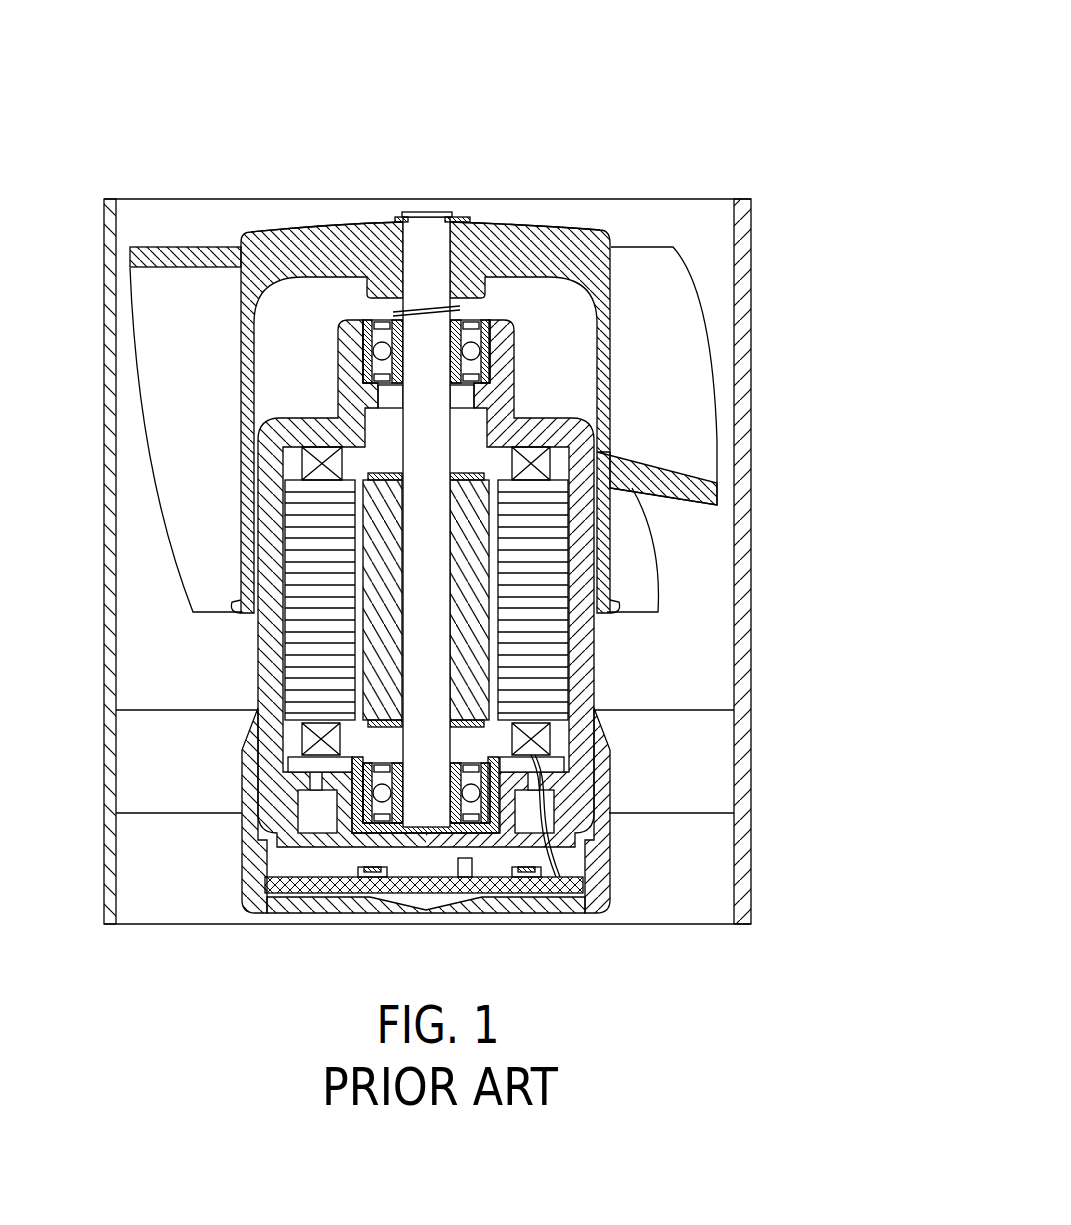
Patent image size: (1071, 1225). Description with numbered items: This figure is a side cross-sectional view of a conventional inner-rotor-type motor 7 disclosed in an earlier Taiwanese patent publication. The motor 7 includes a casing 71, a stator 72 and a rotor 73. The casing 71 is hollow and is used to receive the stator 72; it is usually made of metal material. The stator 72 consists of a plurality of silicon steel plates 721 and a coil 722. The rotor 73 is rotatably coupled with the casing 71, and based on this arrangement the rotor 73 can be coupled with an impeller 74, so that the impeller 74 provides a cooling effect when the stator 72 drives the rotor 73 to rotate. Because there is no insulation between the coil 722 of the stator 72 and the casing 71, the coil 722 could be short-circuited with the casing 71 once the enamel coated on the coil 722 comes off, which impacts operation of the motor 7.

The inner-rotor-type motor 7 is at (633, 106).
The casing 71 is at (583, 633).
The stator 72 is at (560, 452).
The silicon steel plates 721 is at (565, 460).
The coil 722 is at (556, 483).
The rotor 73 is at (425, 228).
The impeller 74 is at (527, 229).